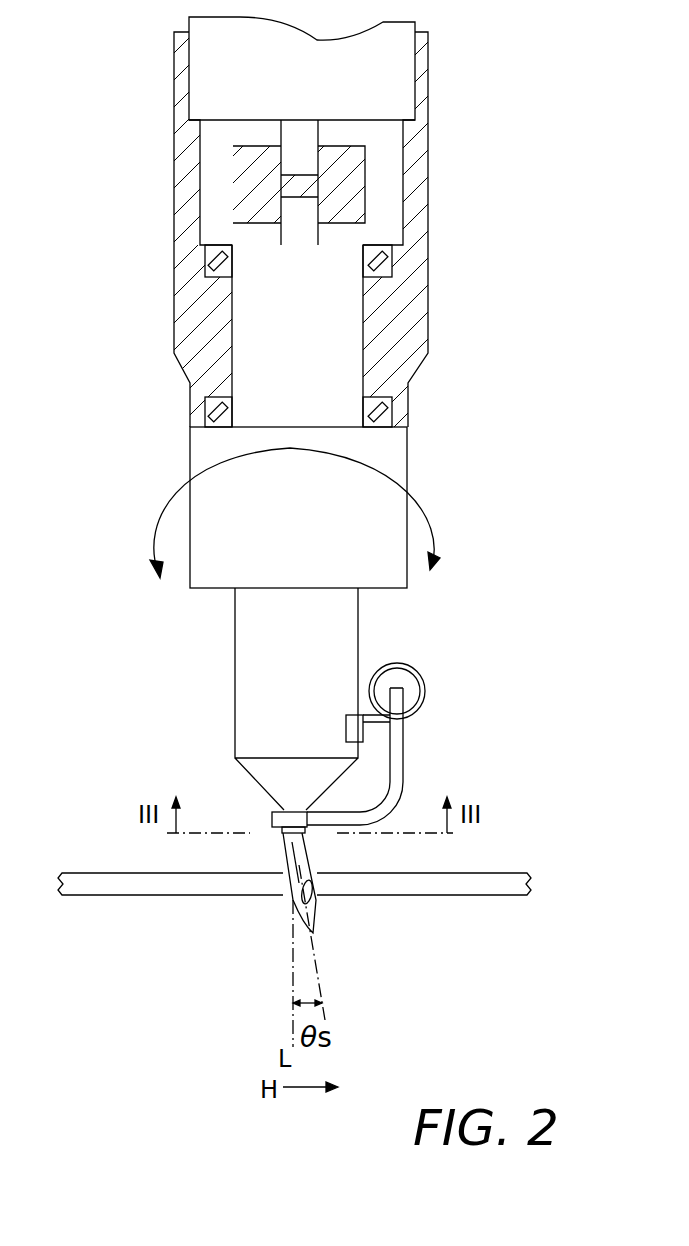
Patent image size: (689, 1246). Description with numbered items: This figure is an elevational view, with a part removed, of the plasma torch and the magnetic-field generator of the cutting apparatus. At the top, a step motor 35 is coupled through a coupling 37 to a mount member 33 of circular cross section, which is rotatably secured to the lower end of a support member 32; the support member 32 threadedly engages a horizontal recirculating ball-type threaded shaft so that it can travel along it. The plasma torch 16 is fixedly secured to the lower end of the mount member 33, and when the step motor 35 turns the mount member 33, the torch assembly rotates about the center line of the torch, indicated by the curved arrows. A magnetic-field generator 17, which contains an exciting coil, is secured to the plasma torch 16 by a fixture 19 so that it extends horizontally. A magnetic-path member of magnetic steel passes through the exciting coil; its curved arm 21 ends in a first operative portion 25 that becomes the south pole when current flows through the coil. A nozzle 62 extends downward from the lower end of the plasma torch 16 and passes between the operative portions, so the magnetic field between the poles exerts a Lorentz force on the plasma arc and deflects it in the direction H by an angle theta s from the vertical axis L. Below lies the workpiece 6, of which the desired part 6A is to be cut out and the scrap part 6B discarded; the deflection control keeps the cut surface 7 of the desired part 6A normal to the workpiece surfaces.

The workpiece 6 is at (294, 873).
The desired part 6A is at (450, 895).
The scrap part 6B is at (155, 895).
The cut surface 7 is at (313, 903).
The plasma torch 16 is at (214, 683).
The magnetic-field generator 17 is at (413, 671).
The fixture 19 is at (363, 714).
The arm 21 is at (406, 763).
The first operative portion 25 is at (286, 807).
The support member 32 is at (420, 309).
The mount member 33 is at (395, 447).
The step motor 35 is at (392, 80).
The coupling 37 is at (347, 181).
The nozzle 62 is at (307, 830).